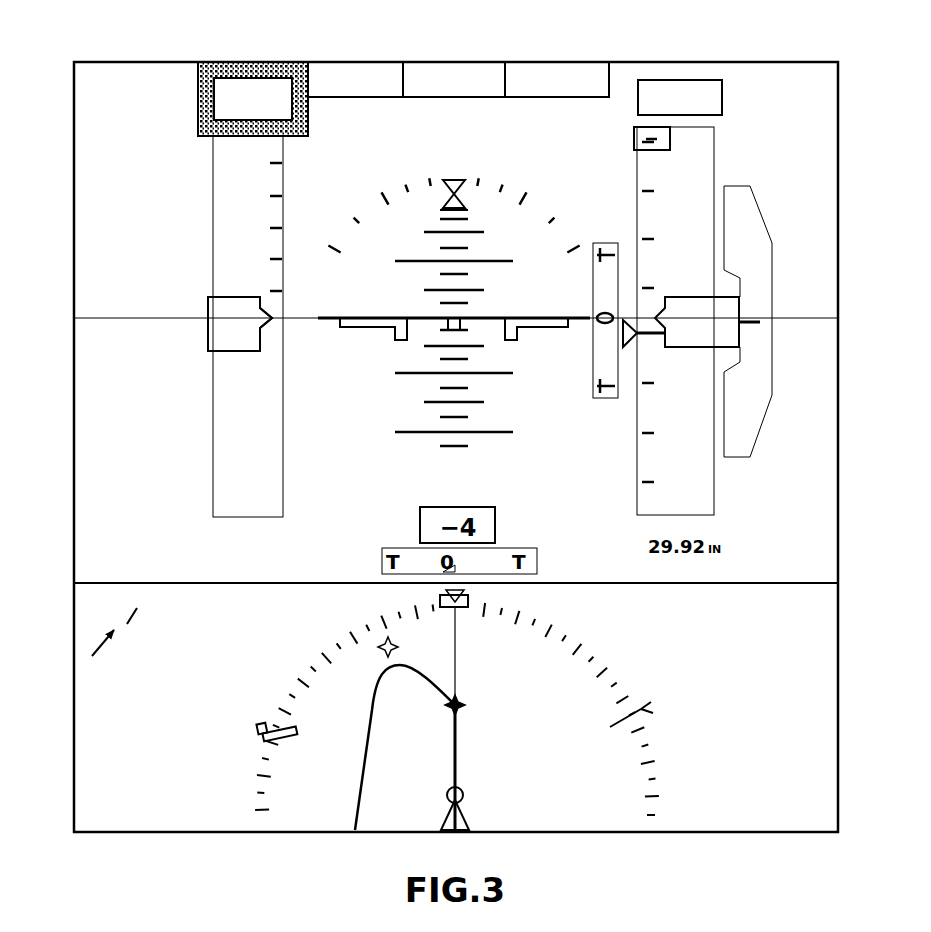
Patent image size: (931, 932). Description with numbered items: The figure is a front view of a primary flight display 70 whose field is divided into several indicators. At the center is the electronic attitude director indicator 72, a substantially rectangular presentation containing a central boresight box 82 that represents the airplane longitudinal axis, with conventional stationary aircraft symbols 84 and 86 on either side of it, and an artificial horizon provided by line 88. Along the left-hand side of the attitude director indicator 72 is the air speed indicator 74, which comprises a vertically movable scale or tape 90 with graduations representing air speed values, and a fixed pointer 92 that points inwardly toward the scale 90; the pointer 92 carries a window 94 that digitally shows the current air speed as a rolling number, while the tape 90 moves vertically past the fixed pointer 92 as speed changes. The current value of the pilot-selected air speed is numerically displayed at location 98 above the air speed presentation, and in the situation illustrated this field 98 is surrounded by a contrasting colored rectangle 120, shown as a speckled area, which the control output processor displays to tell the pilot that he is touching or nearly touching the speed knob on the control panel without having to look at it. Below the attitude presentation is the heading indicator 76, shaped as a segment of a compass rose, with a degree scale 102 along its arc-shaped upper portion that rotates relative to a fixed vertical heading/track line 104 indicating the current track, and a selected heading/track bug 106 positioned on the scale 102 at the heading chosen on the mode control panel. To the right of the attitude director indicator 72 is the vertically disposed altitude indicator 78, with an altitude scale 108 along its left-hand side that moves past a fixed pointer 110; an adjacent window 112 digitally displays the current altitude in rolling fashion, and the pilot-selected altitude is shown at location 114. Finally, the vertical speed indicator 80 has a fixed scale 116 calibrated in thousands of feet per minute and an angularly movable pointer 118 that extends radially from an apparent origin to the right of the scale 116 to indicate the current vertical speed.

The primary flight display 70 is at (684, 38).
The electronic attitude director indicator 72 is at (516, 166).
The air speed indicator 74 is at (186, 247).
The heading indicator 76 is at (447, 709).
The altitude indicator 78 is at (720, 152).
The vertical speed indicator 80 is at (772, 222).
The boresight box 82 is at (462, 322).
The stationary aircraft symbol 84 is at (366, 326).
The stationary aircraft symbol 86 is at (548, 326).
The artificial horizon line 88 is at (412, 318).
The air speed scale 90 is at (283, 178).
The fixed pointer 92 is at (262, 330).
The window 94 is at (208, 334).
The selected air speed display field 98 is at (266, 62).
The degree scale 102 is at (308, 650).
The heading/track line 104 is at (457, 757).
The selected heading/track bug 106 is at (470, 601).
The altitude scale 108 is at (638, 204).
The fixed pointer 110 is at (656, 316).
The window 112 is at (672, 350).
The selected altitude location 114 is at (724, 104).
The vertical speed scale 116 is at (752, 252).
The vertical speed pointer 118 is at (760, 322).
The contrasting colored rectangle 120 is at (198, 100).